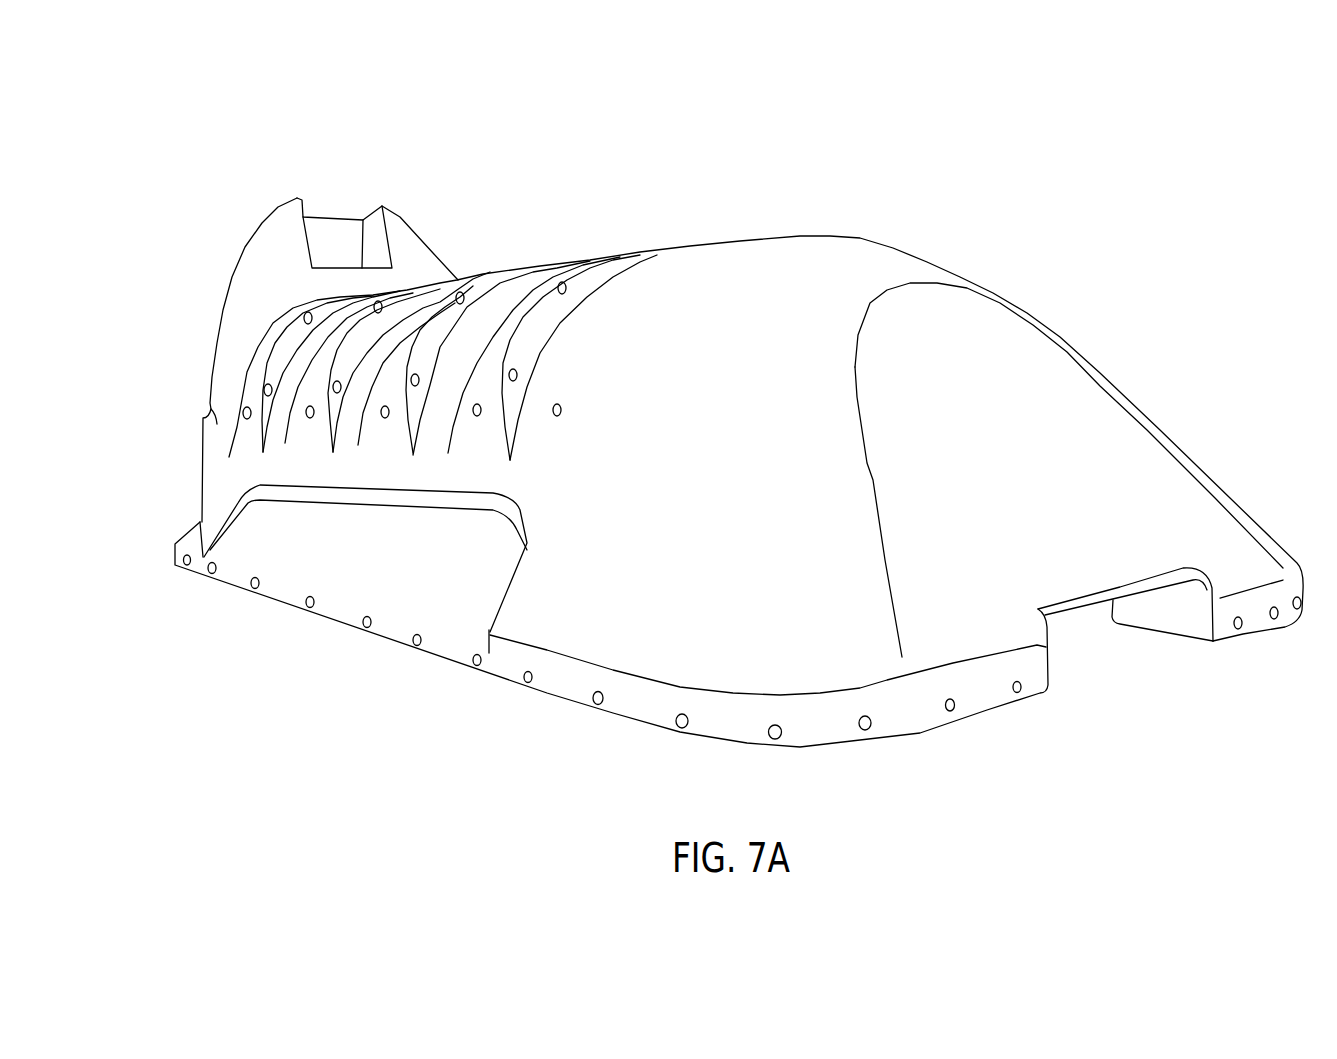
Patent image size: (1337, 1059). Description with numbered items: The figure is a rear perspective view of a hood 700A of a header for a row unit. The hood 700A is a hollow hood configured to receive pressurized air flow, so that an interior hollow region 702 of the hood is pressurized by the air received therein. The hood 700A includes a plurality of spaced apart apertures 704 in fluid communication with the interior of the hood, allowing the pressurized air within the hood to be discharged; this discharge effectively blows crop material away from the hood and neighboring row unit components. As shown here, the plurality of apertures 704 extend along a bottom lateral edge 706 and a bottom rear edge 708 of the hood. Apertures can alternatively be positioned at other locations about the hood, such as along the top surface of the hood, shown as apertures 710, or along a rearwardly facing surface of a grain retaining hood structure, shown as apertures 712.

The hood 700A is at (436, 186).
The interior hollow region 702 is at (833, 267).
The spaced apart apertures 704 is at (306, 604).
The bottom lateral edge 706 is at (390, 642).
The bottom rear edge 708 is at (973, 712).
The apertures 710 is at (246, 418).
The apertures 712 is at (464, 298).